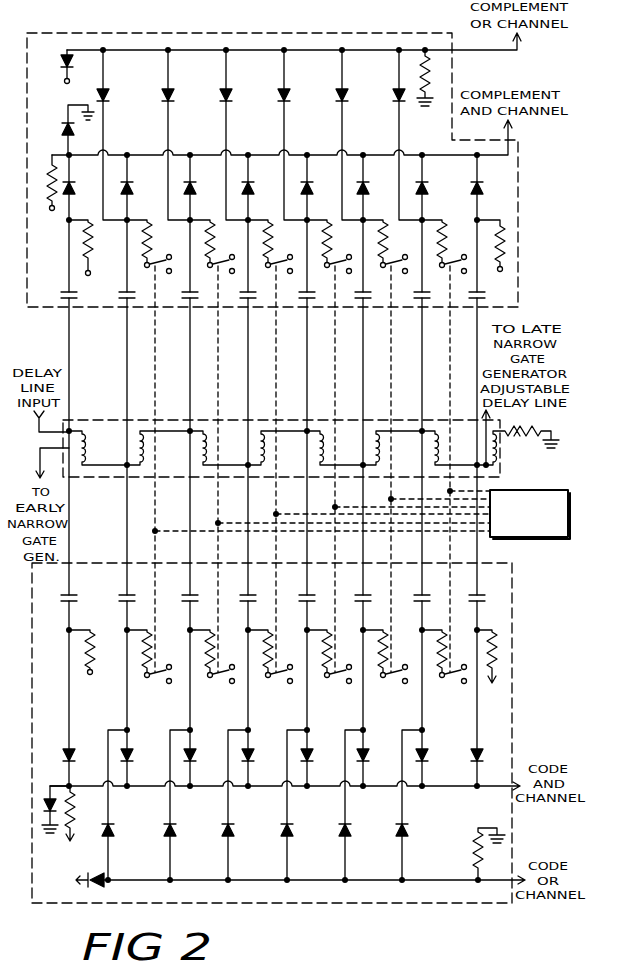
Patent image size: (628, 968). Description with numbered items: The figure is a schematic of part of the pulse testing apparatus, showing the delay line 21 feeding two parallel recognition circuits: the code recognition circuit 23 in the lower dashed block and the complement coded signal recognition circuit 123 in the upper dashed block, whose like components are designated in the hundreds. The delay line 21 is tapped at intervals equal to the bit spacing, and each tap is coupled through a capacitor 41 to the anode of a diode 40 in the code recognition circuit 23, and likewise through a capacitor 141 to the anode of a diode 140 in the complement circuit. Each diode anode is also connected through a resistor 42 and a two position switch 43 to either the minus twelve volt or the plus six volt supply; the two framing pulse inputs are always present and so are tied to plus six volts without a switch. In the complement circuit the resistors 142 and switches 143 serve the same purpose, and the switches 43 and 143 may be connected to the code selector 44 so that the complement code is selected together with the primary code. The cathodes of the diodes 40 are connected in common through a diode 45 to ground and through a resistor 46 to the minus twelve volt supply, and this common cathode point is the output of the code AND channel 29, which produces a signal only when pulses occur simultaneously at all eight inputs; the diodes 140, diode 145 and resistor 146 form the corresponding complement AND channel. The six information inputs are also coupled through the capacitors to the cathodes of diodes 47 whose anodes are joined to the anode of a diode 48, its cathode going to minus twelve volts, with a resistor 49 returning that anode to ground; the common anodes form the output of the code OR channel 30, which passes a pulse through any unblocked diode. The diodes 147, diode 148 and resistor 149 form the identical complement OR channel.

The complement coded signal recognition circuit 123 is at (330, 33).
The diode 148 is at (60, 62).
The diodes 147 is at (161, 96).
The resistor 149 is at (430, 72).
The diode 145 is at (62, 128).
The resistor 146 is at (52, 172).
The diodes 140 is at (121, 190).
The resistors 142 is at (441, 236).
The two position switches 143 is at (152, 262).
The capacitors 141 is at (119, 301).
The delay line 21 is at (243, 420).
The code selector 44 is at (522, 540).
The code recognition circuit 23 is at (366, 905).
The capacitor 41 is at (120, 594).
The resistor 42 is at (144, 650).
The two position switch 43 is at (165, 677).
The diode 40 is at (121, 757).
The diode 45 is at (48, 800).
The resistor 46 is at (76, 822).
The diode 47 is at (164, 830).
The diode 48 is at (96, 885).
The resistor 49 is at (474, 848).
The code AND channel 29 is at (496, 783).
The code OR channel 30 is at (455, 878).